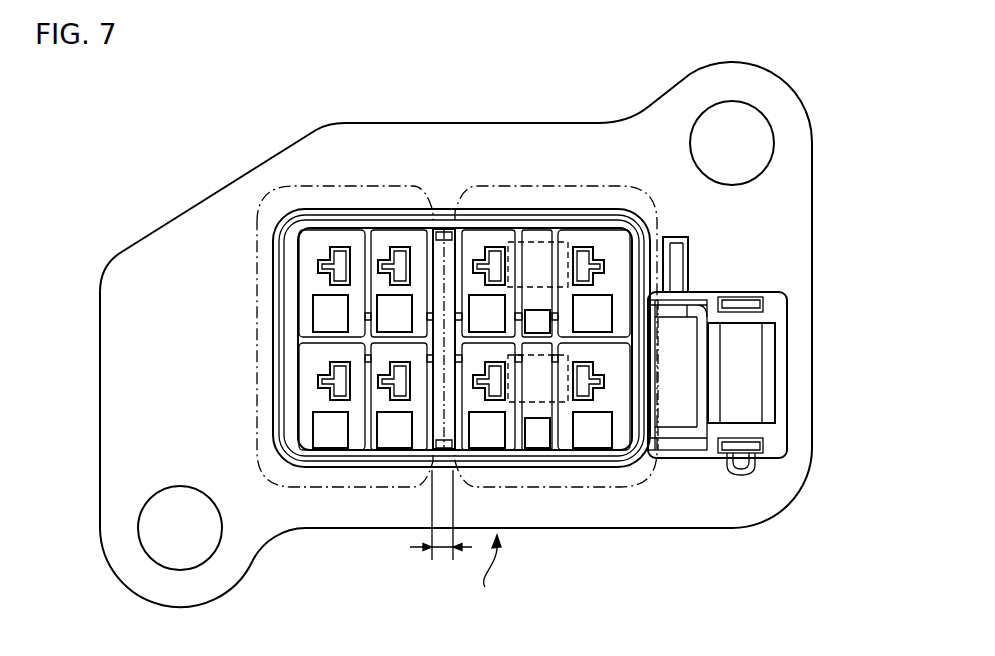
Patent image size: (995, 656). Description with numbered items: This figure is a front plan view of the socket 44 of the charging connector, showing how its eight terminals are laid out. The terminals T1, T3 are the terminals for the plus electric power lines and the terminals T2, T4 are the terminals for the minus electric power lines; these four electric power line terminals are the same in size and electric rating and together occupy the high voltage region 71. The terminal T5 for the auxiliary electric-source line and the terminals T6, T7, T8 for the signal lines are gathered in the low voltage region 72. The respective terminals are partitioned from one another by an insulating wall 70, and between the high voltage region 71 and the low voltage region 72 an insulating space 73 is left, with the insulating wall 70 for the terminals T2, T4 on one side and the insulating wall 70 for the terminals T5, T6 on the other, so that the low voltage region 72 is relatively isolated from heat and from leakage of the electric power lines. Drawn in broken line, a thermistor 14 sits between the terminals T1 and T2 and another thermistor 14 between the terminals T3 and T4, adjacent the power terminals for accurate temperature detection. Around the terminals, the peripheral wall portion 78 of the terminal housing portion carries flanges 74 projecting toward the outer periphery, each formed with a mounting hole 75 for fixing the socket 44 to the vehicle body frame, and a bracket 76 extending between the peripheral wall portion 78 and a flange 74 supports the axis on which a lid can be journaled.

The thermistor 14 is at (537, 242).
The socket 44 is at (486, 571).
The insulating wall 70 is at (441, 228).
The high voltage region 71 is at (640, 197).
The low voltage region 72 is at (305, 183).
The space 73 is at (440, 552).
The flange 74 is at (787, 224).
The mounting hole 75 is at (757, 113).
The bracket 76 is at (703, 460).
The peripheral wall portion 78 is at (273, 238).
The terminal T1 is at (583, 247).
The terminal T2 is at (498, 246).
The terminal T3 is at (573, 403).
The terminal T4 is at (500, 407).
The terminal T5 is at (405, 243).
The terminal T6 is at (395, 400).
The terminal T7 is at (347, 243).
The terminal T8 is at (337, 400).